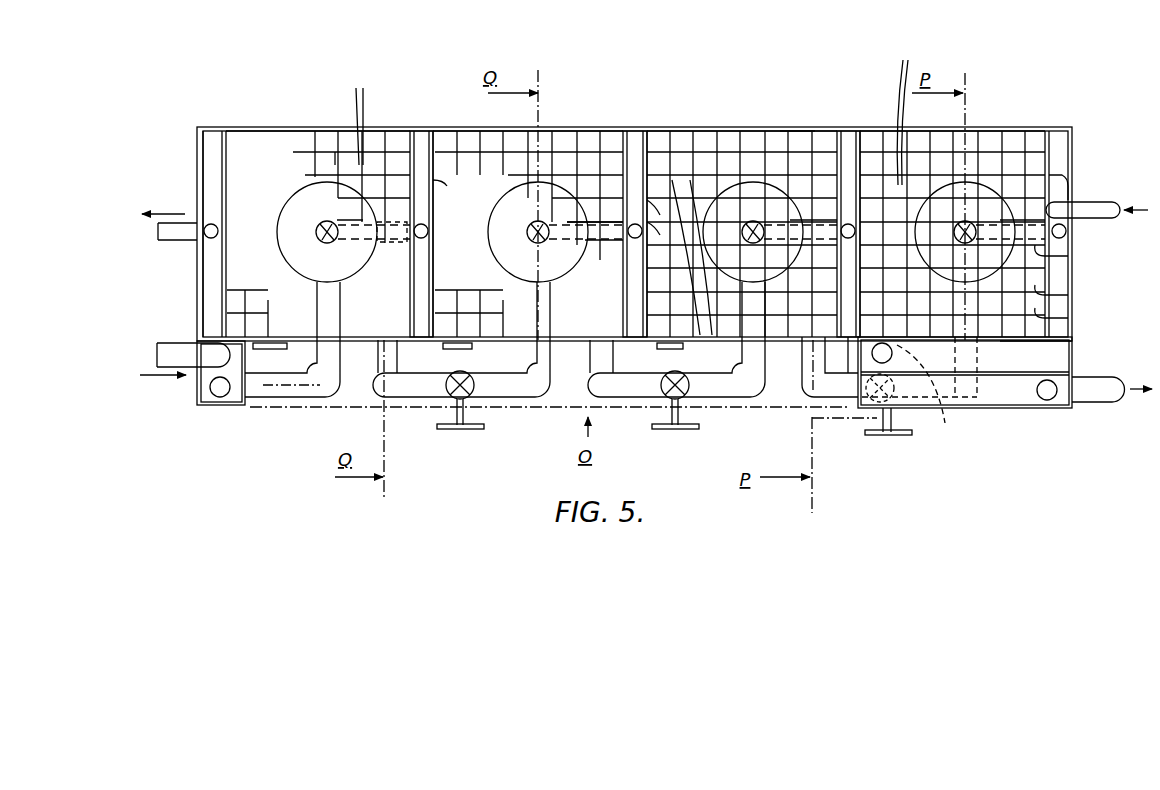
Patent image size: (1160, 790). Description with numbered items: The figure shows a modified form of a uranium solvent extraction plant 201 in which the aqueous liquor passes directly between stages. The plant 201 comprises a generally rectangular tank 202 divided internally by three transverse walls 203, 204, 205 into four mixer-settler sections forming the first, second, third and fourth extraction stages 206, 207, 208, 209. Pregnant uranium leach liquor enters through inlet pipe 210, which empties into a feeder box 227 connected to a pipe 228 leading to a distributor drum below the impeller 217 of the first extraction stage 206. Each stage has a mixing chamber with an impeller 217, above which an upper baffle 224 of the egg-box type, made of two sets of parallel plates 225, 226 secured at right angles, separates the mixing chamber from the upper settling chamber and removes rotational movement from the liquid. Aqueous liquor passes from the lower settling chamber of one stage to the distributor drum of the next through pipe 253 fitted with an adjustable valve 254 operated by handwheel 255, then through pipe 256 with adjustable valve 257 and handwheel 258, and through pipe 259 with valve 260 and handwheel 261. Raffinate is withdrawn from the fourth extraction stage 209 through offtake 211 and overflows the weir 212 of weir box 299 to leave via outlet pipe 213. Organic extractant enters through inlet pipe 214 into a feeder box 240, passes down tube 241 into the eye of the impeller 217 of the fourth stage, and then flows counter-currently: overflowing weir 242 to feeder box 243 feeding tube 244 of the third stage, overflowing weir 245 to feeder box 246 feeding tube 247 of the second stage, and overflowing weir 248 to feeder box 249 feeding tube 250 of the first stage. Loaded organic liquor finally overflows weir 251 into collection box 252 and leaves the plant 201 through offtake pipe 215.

The uranium solvent extraction plant 201 is at (706, 122).
The tank 202 is at (797, 133).
The transverse wall 203 is at (442, 138).
The transverse wall 204 is at (655, 152).
The transverse wall 205 is at (866, 166).
The first extraction stage 206 is at (280, 140).
The second extraction stage 207 is at (565, 160).
The third extraction stage 208 is at (752, 160).
The fourth extraction stage 209 is at (1036, 166).
The inlet pipe 210 is at (170, 350).
The offtake 211 is at (912, 433).
The weir 212 is at (1010, 378).
The outlet pipe 213 is at (1112, 378).
The inlet pipe 214 is at (1110, 204).
The offtake pipe 215 is at (179, 241).
The impeller 217 is at (280, 228).
The upper baffle 224 is at (372, 145).
The parallel plates 225 is at (700, 350).
The parallel plates 226 is at (334, 152).
The feeder box 227 is at (197, 393).
The pipe 228 is at (280, 398).
The feeder box 240 is at (1056, 176).
The tube 241 is at (1072, 253).
The weir 242 is at (855, 360).
The feeder box 243 is at (848, 152).
The tube 244 is at (797, 362).
The weir 245 is at (668, 349).
The feeder box 246 is at (634, 146).
The tube 247 is at (593, 242).
The weir 248 is at (448, 187).
The feeder box 249 is at (424, 143).
The tube 250 is at (393, 243).
The weir 251 is at (222, 150).
The collection box 252 is at (207, 173).
The pipe 253 is at (505, 398).
The adjustable valve 254 is at (452, 397).
The handwheel 255 is at (461, 432).
The pipe 256 is at (620, 399).
The adjustable valve 257 is at (685, 398).
The handwheel 258 is at (673, 430).
The pipe 259 is at (955, 398).
The valve 260 is at (887, 422).
The handwheel 261 is at (874, 438).
The weir box 299 is at (1048, 412).